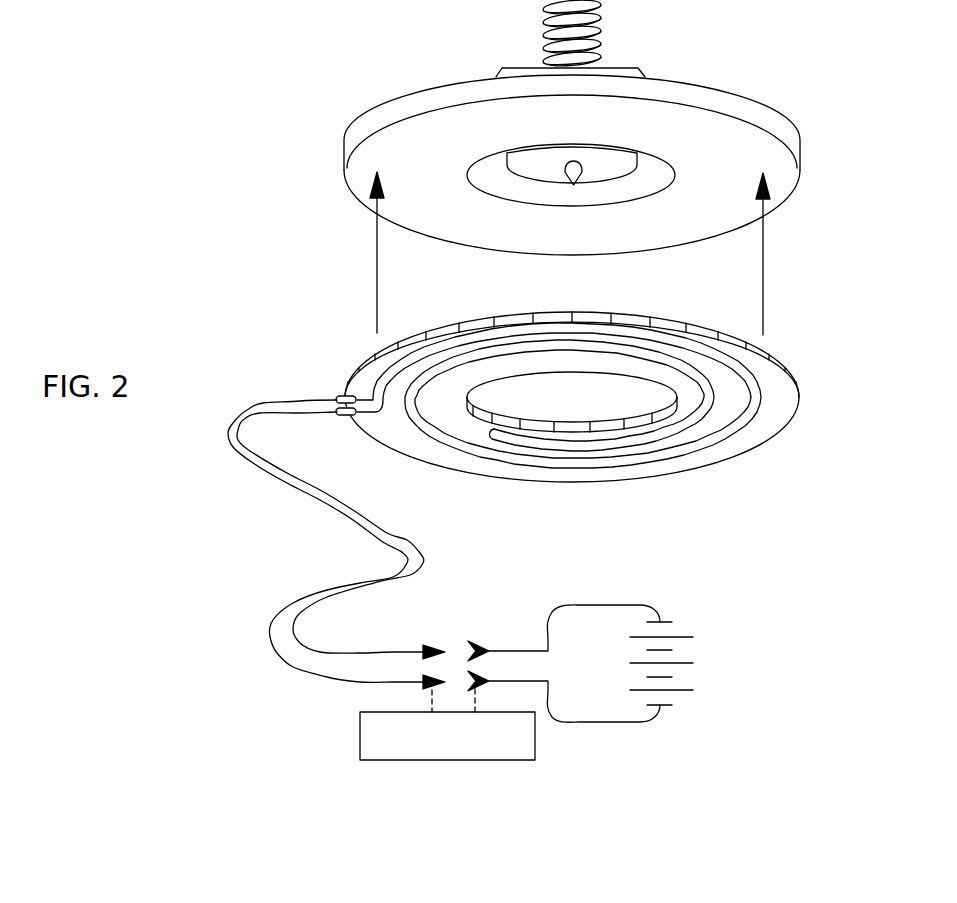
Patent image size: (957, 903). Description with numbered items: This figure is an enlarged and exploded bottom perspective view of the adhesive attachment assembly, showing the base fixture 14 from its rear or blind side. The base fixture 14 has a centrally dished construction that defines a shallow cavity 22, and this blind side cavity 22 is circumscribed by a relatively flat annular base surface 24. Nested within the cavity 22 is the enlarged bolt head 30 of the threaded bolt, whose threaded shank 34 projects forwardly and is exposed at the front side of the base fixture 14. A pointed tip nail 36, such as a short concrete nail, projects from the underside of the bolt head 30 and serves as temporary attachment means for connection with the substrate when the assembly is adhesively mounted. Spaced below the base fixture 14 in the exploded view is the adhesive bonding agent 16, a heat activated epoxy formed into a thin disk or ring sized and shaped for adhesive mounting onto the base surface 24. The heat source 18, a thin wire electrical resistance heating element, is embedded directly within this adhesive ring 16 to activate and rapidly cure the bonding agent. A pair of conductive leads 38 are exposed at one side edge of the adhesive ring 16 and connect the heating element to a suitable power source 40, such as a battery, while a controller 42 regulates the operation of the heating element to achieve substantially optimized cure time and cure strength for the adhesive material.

The base fixture 14 is at (571, 178).
The adhesive bonding agent 16 is at (572, 420).
The heat source 18 is at (543, 458).
The cavity 22 is at (667, 170).
The annular base surface 24 is at (352, 177).
The bolt head 30 is at (550, 165).
The threaded shank 34 is at (543, 3).
The pointed tip nail 36 is at (573, 187).
The conductive leads 38 is at (278, 413).
The power source 40 is at (690, 637).
The controller 42 is at (360, 743).